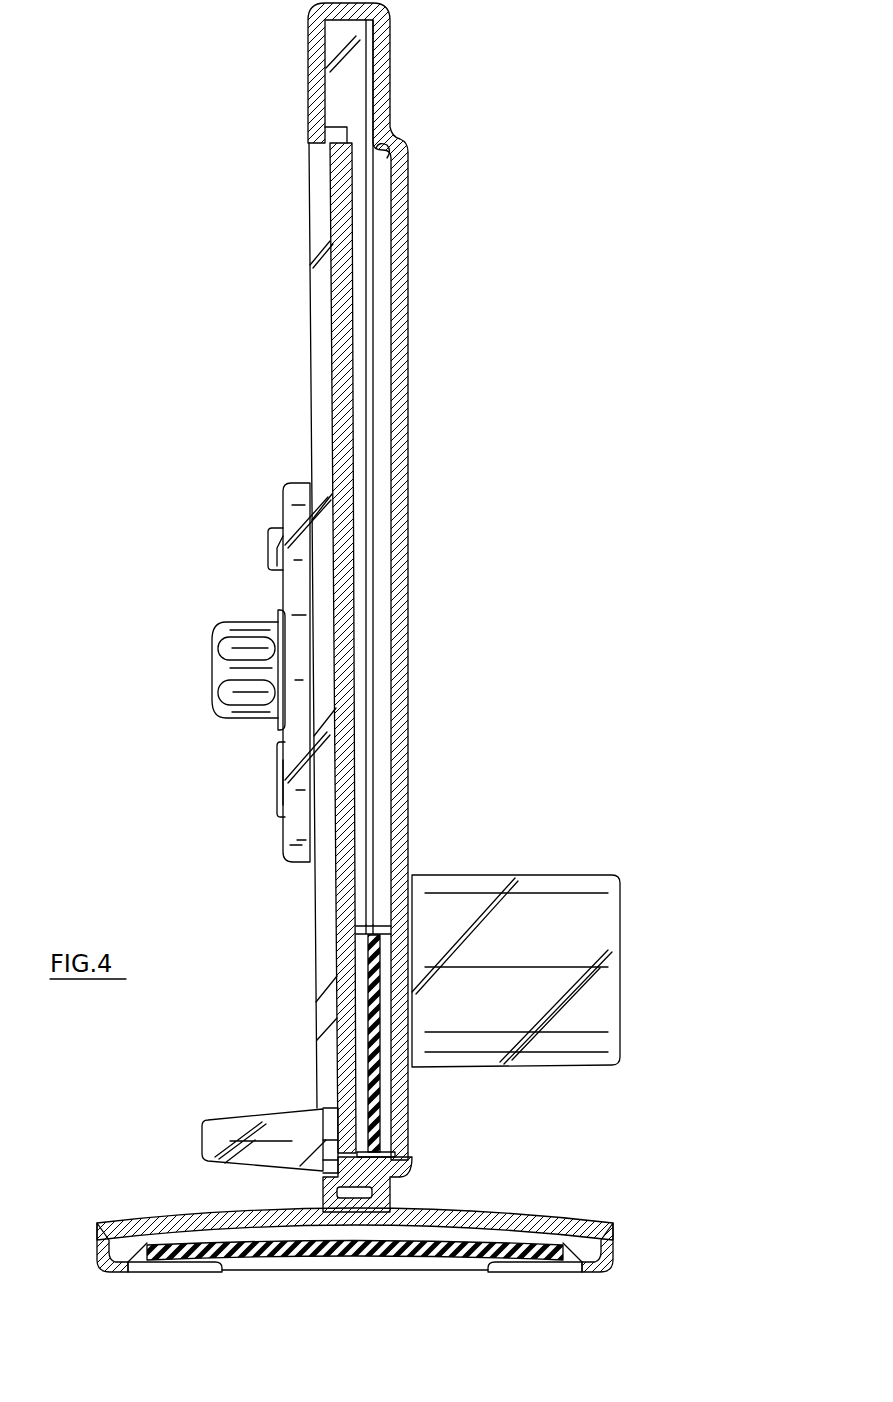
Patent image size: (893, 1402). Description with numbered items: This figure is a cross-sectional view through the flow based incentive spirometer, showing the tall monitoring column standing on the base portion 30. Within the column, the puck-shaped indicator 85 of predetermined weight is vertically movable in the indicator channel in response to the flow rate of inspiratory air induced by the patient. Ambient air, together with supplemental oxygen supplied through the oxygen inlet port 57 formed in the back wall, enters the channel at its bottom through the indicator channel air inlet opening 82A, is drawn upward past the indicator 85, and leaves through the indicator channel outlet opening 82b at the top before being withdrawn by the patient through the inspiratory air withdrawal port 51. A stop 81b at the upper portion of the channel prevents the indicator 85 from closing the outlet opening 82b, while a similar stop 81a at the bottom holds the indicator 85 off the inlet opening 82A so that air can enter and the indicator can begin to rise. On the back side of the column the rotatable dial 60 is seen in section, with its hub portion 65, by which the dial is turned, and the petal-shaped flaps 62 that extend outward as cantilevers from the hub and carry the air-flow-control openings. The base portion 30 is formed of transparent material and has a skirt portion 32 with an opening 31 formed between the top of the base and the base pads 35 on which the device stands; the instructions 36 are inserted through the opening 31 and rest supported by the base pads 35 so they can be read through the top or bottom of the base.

The base portion 30 is at (362, 1252).
The opening 31 is at (98, 1250).
The skirt portion 32 is at (115, 1218).
The base pads 35 is at (152, 1272).
The instructions 36 is at (280, 1260).
The inspiratory air withdrawal port 51 is at (566, 876).
The oxygen inlet port 57 is at (232, 1125).
The rotatable dial 60 is at (243, 672).
The petal-shaped flaps 62 is at (270, 547).
The hub portion 65 is at (230, 672).
The stop 81a is at (350, 1194).
The stop 81b is at (394, 155).
The indicator channel air inlet opening 82A is at (395, 1180).
The indicator channel outlet opening 82b is at (357, 125).
The indicator 85 is at (378, 1140).